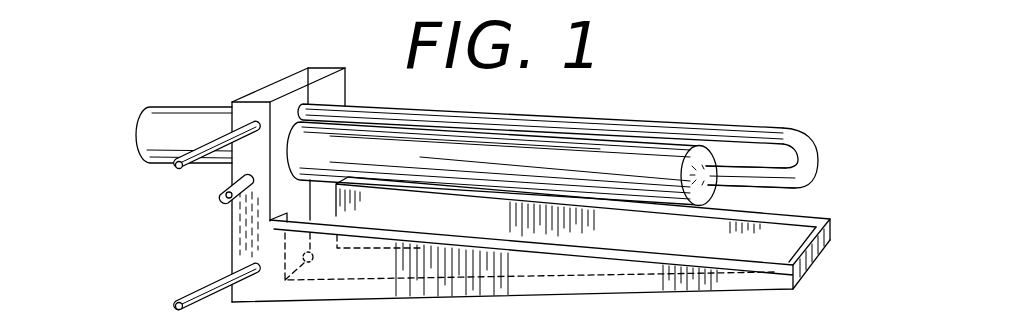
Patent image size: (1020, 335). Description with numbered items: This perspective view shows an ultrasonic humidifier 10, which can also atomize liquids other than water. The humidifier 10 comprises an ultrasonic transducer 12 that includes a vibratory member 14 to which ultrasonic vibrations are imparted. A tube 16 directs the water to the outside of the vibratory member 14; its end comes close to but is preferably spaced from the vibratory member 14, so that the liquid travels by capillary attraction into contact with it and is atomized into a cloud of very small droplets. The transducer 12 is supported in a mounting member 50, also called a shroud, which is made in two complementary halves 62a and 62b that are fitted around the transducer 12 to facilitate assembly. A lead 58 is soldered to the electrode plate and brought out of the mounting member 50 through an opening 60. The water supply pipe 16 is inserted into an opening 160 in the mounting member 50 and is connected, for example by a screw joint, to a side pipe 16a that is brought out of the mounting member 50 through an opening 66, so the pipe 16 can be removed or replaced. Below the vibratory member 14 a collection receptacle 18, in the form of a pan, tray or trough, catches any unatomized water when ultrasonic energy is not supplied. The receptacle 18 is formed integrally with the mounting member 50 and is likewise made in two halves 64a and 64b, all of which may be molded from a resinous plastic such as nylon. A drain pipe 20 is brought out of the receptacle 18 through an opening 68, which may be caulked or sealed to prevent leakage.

The ultrasonic humidifier 10 is at (735, 77).
The ultrasonic transducer 12 is at (452, 140).
The vibratory member 14 is at (818, 178).
The tube 16 is at (584, 111).
The side pipe 16a is at (180, 171).
The opening 160 is at (345, 100).
The collection receptacle 18 is at (562, 254).
The drain pipe 20 is at (146, 297).
The mounting member 50 is at (260, 162).
The lead 58 is at (226, 200).
The opening 60 is at (205, 204).
The complementary part 62a is at (308, 72).
The complementary part 62b is at (267, 92).
The receptacle component 64a is at (832, 246).
The receptacle component 64b is at (808, 275).
The opening 66 is at (233, 127).
The opening 68 is at (184, 283).